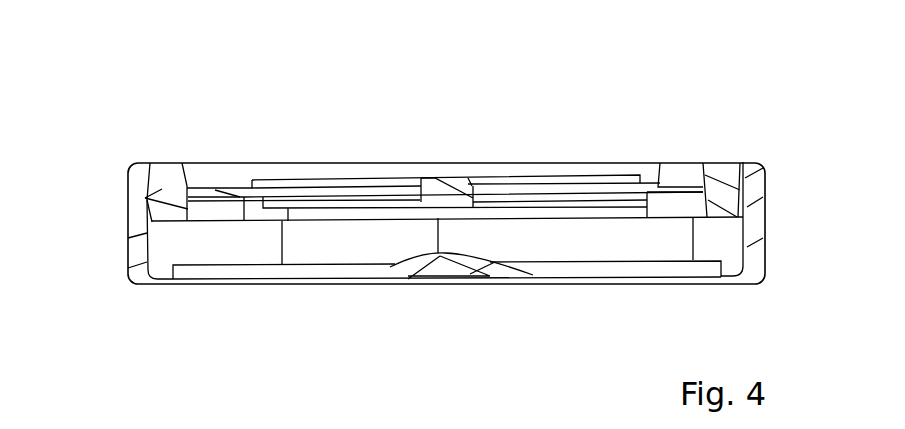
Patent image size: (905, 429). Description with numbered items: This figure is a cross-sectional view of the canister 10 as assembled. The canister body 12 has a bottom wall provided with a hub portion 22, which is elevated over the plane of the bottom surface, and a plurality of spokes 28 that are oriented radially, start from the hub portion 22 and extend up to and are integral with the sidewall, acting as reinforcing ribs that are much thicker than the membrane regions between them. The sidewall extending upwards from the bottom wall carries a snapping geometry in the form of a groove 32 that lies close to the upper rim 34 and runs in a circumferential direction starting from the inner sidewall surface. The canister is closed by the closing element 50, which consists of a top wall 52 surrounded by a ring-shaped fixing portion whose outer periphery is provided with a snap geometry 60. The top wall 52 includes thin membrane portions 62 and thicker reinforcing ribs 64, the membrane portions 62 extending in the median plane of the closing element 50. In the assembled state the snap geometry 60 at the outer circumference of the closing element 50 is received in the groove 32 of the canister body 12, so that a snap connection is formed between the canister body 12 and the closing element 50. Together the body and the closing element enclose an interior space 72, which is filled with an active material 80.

The canister 10 is at (192, 325).
The canister body 12 is at (542, 282).
The hub portion 22 is at (458, 260).
The spokes 28 is at (251, 268).
The groove 32 is at (142, 201).
The upper rim 34 is at (752, 163).
The closing element 50 is at (377, 177).
The top wall 52 is at (727, 152).
The snap geometry 60 is at (147, 198).
The membrane portions 62 is at (657, 185).
The reinforcing ribs 64 is at (280, 180).
The interior space 72 is at (338, 250).
The active material 80 is at (572, 250).